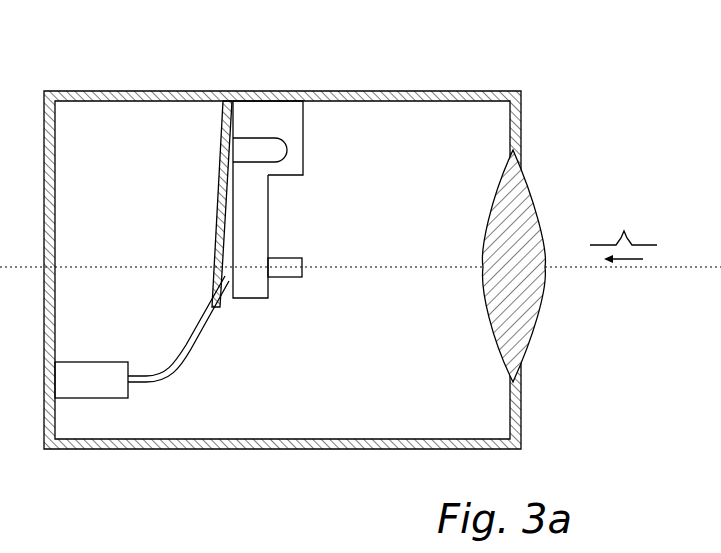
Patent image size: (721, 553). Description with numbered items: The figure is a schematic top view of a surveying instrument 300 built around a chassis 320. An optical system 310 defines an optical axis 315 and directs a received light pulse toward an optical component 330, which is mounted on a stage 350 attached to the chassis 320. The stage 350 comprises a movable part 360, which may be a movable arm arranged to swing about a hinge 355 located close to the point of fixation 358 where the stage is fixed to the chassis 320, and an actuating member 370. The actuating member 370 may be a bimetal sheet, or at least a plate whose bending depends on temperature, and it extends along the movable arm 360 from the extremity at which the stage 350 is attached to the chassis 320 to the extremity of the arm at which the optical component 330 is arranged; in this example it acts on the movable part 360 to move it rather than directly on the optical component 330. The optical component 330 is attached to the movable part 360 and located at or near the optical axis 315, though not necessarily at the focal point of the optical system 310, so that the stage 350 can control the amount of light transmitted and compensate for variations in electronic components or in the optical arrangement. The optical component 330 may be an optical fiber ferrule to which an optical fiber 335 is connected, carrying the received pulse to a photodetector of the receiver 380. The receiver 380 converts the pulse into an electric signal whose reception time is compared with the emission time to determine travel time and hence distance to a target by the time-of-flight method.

The surveying instrument 300 is at (556, 65).
The optical system 310 is at (542, 213).
The optical axis 315 is at (607, 266).
The chassis 320 is at (156, 449).
The optical component 330 is at (290, 278).
The optical fiber 335 is at (183, 343).
The stage 350 is at (316, 170).
The hinge 355 is at (288, 162).
The point of fixation 358 is at (263, 107).
The movable part 360 is at (270, 214).
The actuating member 370 is at (221, 210).
The receiver 380 is at (112, 362).